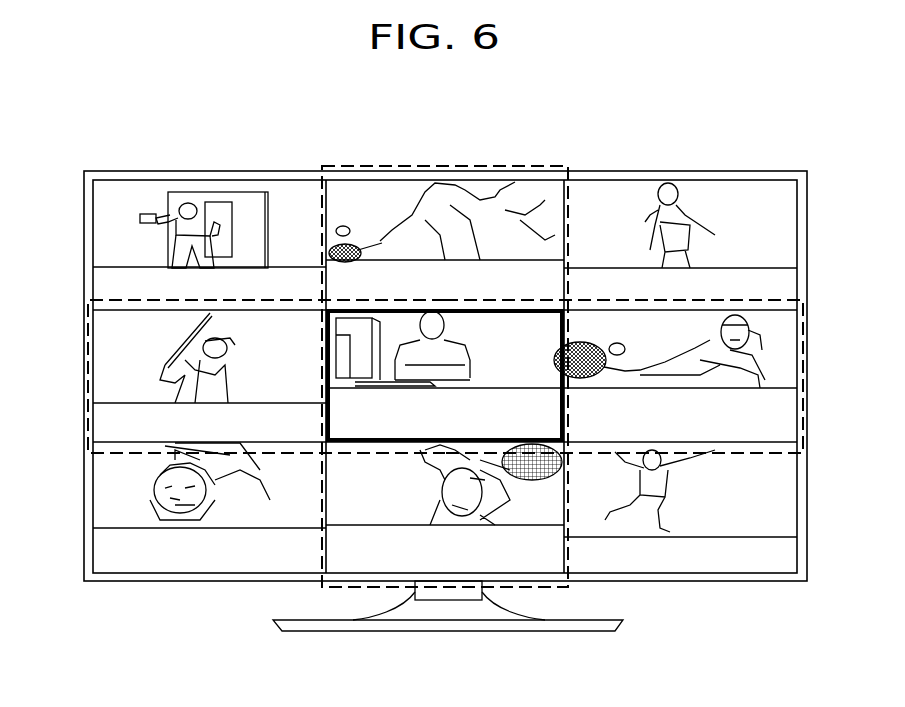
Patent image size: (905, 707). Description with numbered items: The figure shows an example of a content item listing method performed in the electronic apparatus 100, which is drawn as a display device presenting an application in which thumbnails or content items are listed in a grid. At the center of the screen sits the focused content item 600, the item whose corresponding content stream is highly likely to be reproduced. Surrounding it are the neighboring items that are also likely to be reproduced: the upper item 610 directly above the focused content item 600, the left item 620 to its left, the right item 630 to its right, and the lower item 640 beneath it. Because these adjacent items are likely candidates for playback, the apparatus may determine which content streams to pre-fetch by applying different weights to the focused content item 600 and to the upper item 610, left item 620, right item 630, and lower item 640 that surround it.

The electronic apparatus 100 is at (733, 172).
The focused content item 600 is at (519, 330).
The upper item 610 is at (367, 190).
The left item 620 is at (105, 367).
The right item 630 is at (790, 369).
The lower item 640 is at (509, 562).